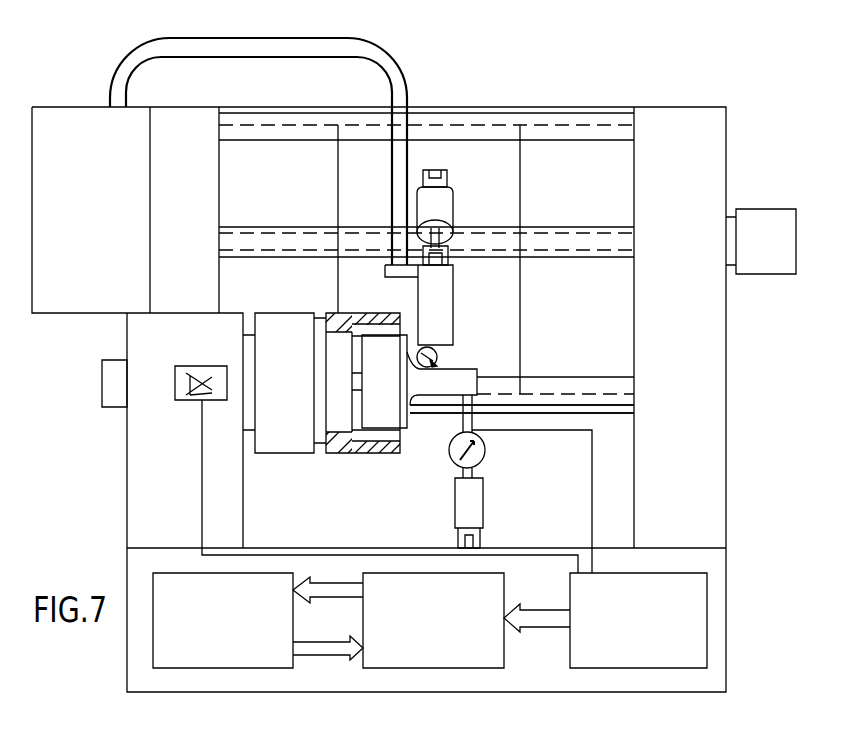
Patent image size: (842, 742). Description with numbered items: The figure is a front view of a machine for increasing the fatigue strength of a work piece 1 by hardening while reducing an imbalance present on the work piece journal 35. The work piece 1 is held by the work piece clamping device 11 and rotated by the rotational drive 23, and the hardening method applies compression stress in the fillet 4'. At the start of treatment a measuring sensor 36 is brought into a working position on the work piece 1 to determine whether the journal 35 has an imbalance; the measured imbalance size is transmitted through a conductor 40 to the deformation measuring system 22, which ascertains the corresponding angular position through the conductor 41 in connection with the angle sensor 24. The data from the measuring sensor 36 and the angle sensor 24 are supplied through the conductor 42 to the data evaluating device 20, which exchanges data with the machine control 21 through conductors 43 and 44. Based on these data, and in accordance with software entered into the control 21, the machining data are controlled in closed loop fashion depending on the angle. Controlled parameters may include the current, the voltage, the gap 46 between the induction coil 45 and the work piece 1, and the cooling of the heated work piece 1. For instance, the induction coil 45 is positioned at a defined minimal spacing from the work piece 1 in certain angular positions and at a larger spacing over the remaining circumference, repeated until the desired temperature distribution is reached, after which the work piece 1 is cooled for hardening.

The work piece 1 is at (378, 343).
The work piece clamping device 11 is at (338, 318).
The fillet 4' is at (522, 435).
The data evaluating device 20 is at (410, 653).
The machine control 21 is at (183, 648).
The deformation measuring system 22 is at (700, 628).
The rotational drive 23 is at (293, 437).
The angle sensor 24 is at (185, 368).
The journal 35 is at (473, 377).
The measuring sensor 36 is at (477, 453).
The conductor 40 is at (592, 507).
The conductor 41 is at (202, 448).
The conductor 42 is at (540, 615).
The conductor 43 is at (338, 590).
The conductor 44 is at (315, 653).
The induction coil 45 is at (447, 345).
The gap 46 is at (440, 362).